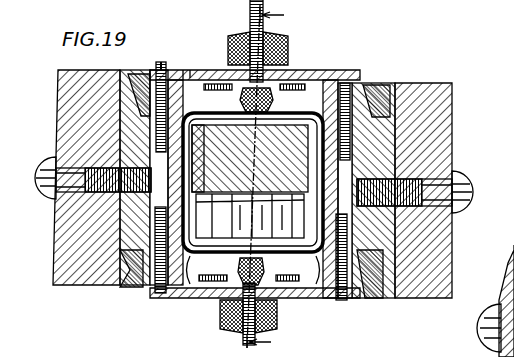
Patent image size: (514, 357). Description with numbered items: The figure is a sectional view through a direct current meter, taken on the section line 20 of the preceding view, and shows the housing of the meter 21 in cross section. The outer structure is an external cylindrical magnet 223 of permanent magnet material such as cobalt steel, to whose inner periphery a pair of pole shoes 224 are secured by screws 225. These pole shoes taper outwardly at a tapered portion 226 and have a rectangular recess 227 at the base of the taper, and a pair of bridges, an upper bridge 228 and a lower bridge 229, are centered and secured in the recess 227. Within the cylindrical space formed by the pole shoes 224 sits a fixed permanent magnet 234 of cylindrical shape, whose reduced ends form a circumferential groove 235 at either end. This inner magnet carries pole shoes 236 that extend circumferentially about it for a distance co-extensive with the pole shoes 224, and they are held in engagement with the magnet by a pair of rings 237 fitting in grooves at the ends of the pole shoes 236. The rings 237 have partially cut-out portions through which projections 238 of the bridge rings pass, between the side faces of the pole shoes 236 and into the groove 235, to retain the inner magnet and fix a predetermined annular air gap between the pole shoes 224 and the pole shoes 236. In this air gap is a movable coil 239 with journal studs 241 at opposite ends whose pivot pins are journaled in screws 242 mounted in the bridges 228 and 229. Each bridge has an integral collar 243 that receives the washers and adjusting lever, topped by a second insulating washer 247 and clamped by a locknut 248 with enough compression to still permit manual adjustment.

The center line / dimension reference 20 is at (279, 179).
The housing 21 is at (286, 182).
The external cylindrical magnet 223 is at (432, 93).
The pole shoes 224 is at (130, 100).
The screws 225 is at (50, 195).
The tapered portion 226 is at (130, 283).
The rectangular recess 227 is at (133, 250).
The upper bridge 228 is at (295, 70).
The lower bridge 229 is at (318, 303).
The fixed permanent magnet 234 is at (190, 62).
The circumferential groove 235 is at (345, 100).
The pole shoes 236 is at (173, 160).
The rings 237 is at (165, 70).
The projections 238 is at (239, 266).
The movable coil 239 is at (167, 293).
The journal studs 241 is at (268, 97).
The screws 242 is at (232, 40).
The integral collar 243 is at (297, 68).
The second insulating washer 247 is at (222, 356).
The locknut 248 is at (200, 344).